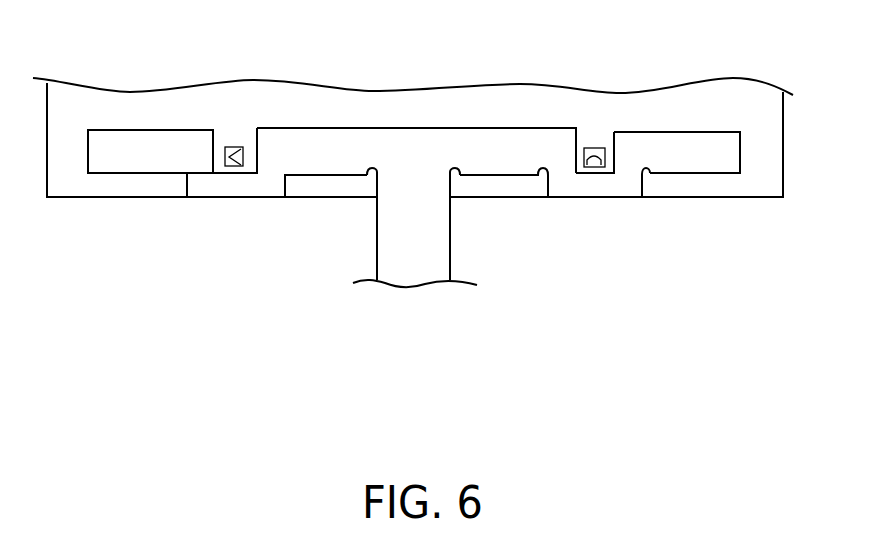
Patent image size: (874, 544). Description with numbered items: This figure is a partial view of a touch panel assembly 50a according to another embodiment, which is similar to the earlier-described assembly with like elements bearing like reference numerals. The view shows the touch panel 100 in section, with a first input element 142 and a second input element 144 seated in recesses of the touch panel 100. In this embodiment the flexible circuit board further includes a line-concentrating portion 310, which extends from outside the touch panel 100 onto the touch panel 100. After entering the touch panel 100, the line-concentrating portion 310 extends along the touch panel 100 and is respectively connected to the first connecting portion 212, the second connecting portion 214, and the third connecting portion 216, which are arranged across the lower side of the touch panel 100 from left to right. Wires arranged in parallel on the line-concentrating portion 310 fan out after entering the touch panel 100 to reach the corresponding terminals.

The touch panel 100 is at (760, 117).
The first input element 142 is at (237, 145).
The second input element 144 is at (594, 147).
The first connecting portion 212 is at (123, 150).
The second connecting portion 214 is at (315, 137).
The third connecting portion 216 is at (693, 160).
The line-concentrating portion 310 is at (422, 247).
The touch panel assembly 50a is at (725, 429).